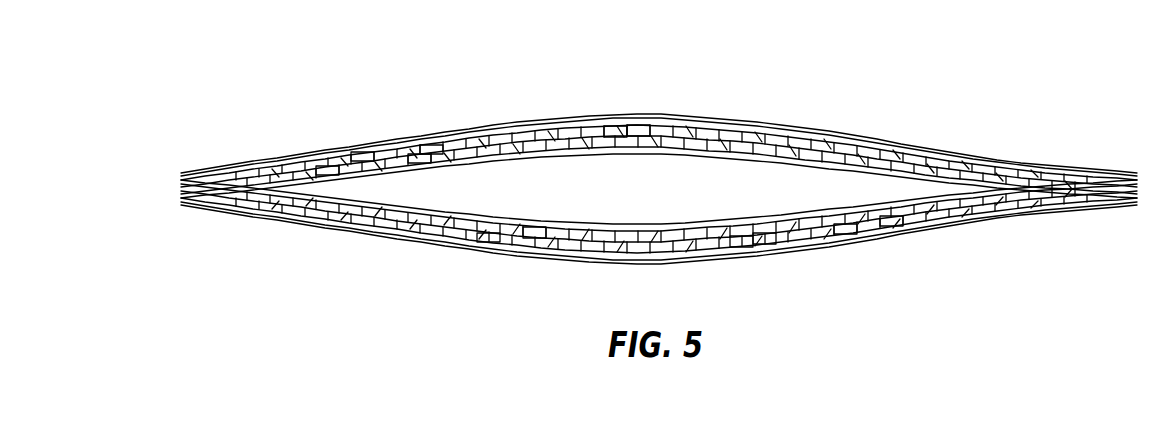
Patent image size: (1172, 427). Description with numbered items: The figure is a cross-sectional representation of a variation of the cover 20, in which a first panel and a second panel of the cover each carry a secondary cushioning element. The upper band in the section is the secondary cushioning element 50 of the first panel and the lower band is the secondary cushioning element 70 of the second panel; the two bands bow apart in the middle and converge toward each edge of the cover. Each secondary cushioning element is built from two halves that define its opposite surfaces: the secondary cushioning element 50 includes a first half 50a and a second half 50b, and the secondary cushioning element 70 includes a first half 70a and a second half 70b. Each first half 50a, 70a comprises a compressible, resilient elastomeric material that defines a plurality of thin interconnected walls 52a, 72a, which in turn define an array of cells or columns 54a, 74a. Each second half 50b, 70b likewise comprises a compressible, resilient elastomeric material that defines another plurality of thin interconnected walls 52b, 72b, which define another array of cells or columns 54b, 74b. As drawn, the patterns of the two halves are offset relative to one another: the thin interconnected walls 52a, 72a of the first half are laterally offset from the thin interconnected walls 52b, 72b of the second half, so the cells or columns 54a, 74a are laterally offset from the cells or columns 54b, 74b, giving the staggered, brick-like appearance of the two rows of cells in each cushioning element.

The cover 20 is at (168, 96).
The secondary cushioning element 50 is at (806, 129).
The first half 50a is at (612, 130).
The second half 50b is at (645, 132).
The thin interconnected walls 52a is at (365, 152).
The thin interconnected walls 52b is at (330, 161).
The cells or columns 54a is at (422, 150).
The cells or columns 54b is at (425, 160).
The secondary cushioning element 70 is at (432, 247).
The first half 70a is at (487, 240).
The second half 70b is at (538, 235).
The thin interconnected walls 72a is at (735, 247).
The thin interconnected walls 72b is at (768, 245).
The cells or columns 74a is at (845, 238).
The cells or columns 74b is at (890, 235).